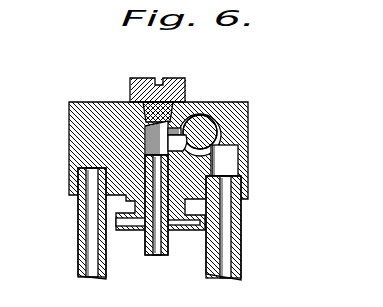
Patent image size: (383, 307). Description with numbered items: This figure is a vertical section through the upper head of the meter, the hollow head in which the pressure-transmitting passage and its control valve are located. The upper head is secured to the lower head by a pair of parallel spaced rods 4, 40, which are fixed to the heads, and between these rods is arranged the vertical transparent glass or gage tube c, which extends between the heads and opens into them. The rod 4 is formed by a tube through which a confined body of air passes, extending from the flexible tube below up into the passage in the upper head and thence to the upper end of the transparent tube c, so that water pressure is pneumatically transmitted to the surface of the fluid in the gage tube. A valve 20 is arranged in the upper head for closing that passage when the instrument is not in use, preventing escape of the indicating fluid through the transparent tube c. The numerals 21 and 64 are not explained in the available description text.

The valve body block 21 is at (235, 118).
The valve 20 is at (196, 120).
The valve seat passage 64 is at (170, 124).
The rod 40 is at (76, 265).
The transparent glass or gage tube c is at (191, 178).
The rod 4 is at (217, 242).